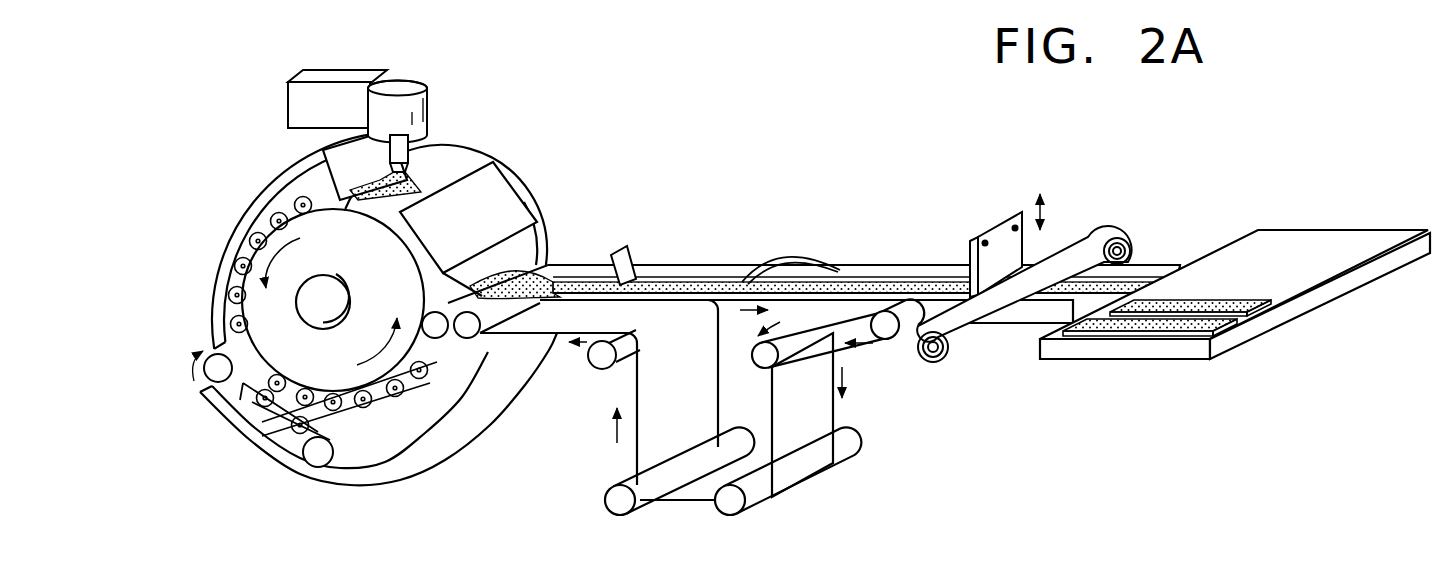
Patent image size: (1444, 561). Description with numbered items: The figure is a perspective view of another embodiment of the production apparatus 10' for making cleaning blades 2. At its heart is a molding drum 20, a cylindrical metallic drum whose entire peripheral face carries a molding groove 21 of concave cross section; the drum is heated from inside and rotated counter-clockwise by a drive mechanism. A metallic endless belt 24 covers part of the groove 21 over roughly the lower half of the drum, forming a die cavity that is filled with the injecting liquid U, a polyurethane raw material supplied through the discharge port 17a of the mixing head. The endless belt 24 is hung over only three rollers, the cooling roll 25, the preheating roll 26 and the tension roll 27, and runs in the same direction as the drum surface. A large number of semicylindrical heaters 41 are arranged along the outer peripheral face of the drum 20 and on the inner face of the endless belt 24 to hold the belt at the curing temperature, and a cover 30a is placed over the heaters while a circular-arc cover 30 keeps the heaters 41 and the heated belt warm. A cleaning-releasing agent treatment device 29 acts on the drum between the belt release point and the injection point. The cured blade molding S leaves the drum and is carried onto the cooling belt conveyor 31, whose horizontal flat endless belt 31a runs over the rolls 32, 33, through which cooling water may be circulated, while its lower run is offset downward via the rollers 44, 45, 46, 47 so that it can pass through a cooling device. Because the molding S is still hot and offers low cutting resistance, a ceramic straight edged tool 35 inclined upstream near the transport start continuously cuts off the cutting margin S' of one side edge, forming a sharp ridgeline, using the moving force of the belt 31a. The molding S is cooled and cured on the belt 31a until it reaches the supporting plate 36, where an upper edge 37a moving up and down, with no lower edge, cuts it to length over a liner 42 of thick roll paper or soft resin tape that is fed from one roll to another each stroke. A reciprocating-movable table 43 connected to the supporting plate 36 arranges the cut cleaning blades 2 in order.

The production apparatus 10' is at (712, 135).
The molding drum 20 is at (553, 221).
The cover 30a is at (236, 220).
The cooling roll 25 is at (437, 332).
The semicylindrical heaters 41 is at (232, 292).
The cleaning-releasing agent treatment device 29 is at (497, 197).
The discharge port 17a is at (392, 146).
The injecting liquid U is at (410, 168).
The molding groove 21 is at (435, 185).
The circular-arc cover 30 is at (217, 408).
The endless belt 24 is at (278, 413).
The preheating roll 26 is at (207, 383).
The tension roll 27 is at (317, 458).
The roll 32 is at (460, 333).
The cooling belt conveyor 31 is at (616, 379).
The endless belt 31a is at (633, 463).
The roller 47 is at (595, 363).
The roller 46 is at (613, 508).
The roller 45 is at (723, 502).
The roller 44 is at (758, 357).
The roll 33 is at (885, 331).
The supporting plate 36 is at (1028, 327).
The blade molding S is at (811, 246).
The cutting margin S' is at (792, 237).
The ceramic straight edged tool 35 is at (630, 260).
The upper edge 37a is at (990, 232).
The liner 42 is at (975, 303).
The reciprocating-movable table 43 is at (1147, 362).
The cleaning blades 2 is at (1187, 305).